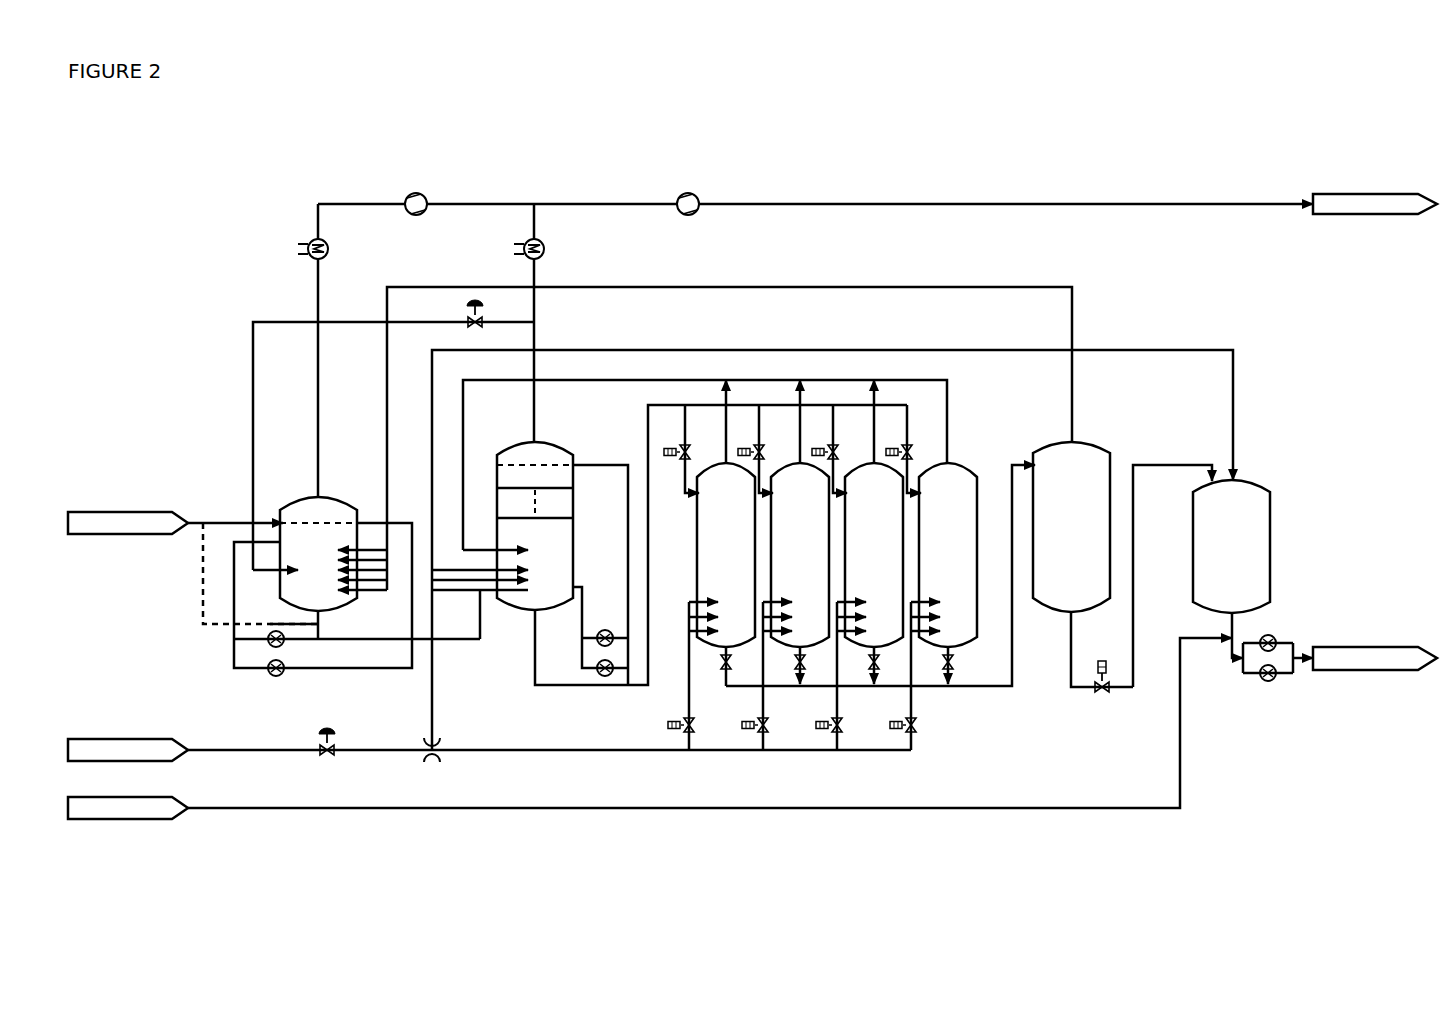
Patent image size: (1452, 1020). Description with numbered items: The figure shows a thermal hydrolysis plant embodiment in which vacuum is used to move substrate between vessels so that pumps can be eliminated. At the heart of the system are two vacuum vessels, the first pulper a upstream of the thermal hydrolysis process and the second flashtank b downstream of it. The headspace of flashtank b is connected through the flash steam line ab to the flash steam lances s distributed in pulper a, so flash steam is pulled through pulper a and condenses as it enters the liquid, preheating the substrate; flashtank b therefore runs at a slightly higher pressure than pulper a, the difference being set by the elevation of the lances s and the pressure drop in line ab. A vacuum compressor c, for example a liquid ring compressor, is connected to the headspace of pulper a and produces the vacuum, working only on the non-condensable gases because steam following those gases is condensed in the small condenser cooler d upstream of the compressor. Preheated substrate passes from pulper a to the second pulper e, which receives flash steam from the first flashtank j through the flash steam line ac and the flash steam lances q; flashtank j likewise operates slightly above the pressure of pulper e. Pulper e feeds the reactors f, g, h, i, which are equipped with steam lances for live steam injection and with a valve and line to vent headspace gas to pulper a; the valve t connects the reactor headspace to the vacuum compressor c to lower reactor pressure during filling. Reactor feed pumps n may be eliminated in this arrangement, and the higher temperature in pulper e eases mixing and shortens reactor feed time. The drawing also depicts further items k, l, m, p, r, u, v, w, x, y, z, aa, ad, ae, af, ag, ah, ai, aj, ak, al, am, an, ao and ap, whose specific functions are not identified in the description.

The pulper 1 a is at (786, 601).
The flashtank 2 b is at (1231, 546).
The vacuum compressor c is at (416, 188).
The condenser cooler d is at (323, 251).
The pulper 2 e is at (702, 545).
The reactor f is at (726, 574).
The reactor g is at (800, 573).
The reactor h is at (874, 573).
The reactor i is at (948, 573).
The flashtank 1 j is at (1083, 567).
The compressor k is at (688, 187).
The heat exchanger l is at (536, 251).
The pump m is at (357, 648).
The reactor feed pumps n is at (607, 631).
The inlet nozzles p is at (821, 612).
The flash steam lances q is at (488, 579).
The inlet line r is at (495, 538).
The flash steam lances s is at (353, 573).
The valve t is at (393, 433).
The inlet line u is at (277, 583).
The outlet line v is at (562, 562).
The outlet line w is at (323, 585).
The line x is at (465, 614).
The valve y is at (793, 449).
The line z is at (880, 575).
The line aa is at (1172, 576).
The flash steam line ab is at (729, 424).
The flash steam line ac is at (832, 535).
The gas line ad is at (705, 452).
The gas line ae is at (332, 378).
The gas line af is at (545, 350).
The gas line ag is at (361, 206).
The gas line ah is at (552, 206).
The gas outlet stream ai is at (1068, 187).
The inlet stream aj is at (488, 736).
The inlet stream ak is at (649, 728).
The product outlet stream al is at (1365, 645).
The mixer am is at (443, 764).
The valve an is at (803, 690).
The valve ao is at (324, 759).
The feed inlet stream ap is at (192, 552).